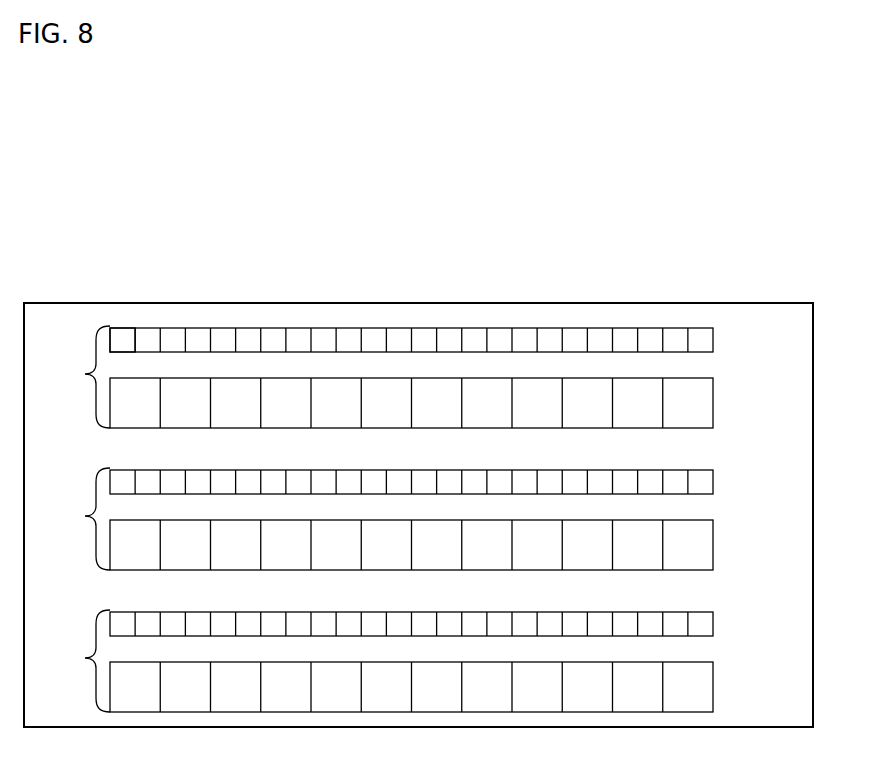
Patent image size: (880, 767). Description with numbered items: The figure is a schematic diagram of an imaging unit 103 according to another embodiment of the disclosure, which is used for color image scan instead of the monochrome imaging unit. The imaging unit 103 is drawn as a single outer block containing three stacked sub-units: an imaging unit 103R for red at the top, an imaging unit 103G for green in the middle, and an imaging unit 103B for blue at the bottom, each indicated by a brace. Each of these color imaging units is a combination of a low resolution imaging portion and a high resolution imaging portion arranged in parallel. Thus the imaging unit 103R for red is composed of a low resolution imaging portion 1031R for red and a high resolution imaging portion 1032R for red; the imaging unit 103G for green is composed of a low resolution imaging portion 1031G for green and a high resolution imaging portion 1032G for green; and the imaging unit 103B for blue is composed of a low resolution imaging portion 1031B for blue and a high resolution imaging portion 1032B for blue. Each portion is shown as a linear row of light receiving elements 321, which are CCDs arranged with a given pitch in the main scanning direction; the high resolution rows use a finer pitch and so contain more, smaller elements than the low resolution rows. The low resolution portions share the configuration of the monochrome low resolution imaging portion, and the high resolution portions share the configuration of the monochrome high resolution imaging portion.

The imaging unit 103 is at (663, 284).
The light receiving element 321 is at (125, 327).
The imaging unit for red 103R is at (415, 348).
The imaging unit for green 103G is at (416, 519).
The imaging unit for blue 103B is at (415, 661).
The low resolution imaging portion for red 1031R is at (440, 311).
The high resolution imaging portion for red 1032R is at (714, 402).
The low resolution imaging portion for green 1031G is at (714, 483).
The high resolution imaging portion for green 1032G is at (714, 544).
The low resolution imaging portion for blue 1031B is at (714, 625).
The high resolution imaging portion for blue 1032B is at (714, 686).